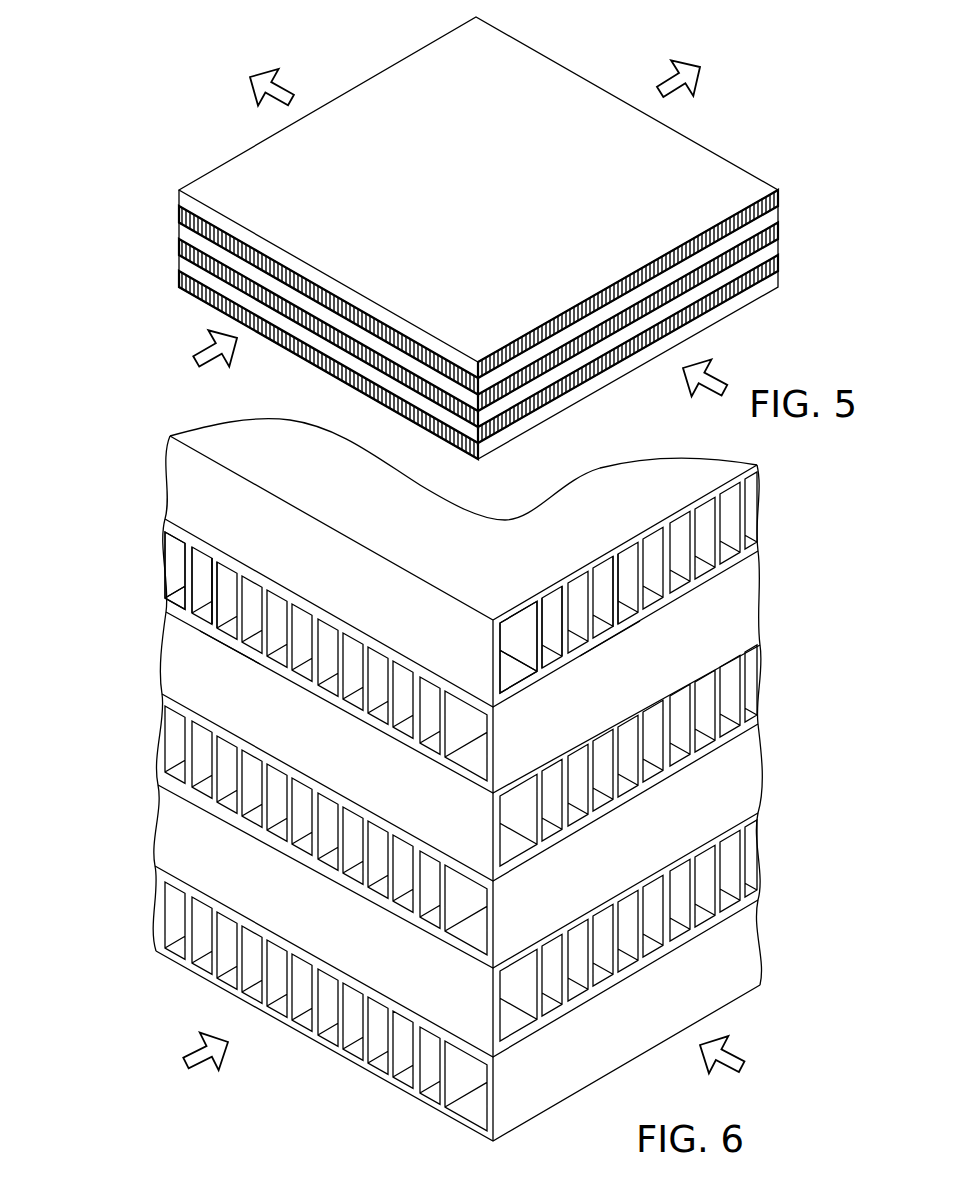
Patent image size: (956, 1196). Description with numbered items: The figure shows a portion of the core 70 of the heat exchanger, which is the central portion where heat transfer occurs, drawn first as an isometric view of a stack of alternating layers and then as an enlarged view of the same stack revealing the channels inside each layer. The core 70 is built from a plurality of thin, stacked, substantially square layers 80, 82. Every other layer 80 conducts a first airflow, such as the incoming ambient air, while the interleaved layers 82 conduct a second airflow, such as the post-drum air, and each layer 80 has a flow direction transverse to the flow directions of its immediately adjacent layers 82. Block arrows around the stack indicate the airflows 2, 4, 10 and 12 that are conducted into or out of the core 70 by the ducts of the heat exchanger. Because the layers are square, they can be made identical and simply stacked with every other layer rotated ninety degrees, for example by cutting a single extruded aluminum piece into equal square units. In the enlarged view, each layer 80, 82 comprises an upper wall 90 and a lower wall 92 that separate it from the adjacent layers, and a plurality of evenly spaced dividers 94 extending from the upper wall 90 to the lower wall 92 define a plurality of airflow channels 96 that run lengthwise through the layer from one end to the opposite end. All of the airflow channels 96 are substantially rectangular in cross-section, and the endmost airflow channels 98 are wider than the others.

In FIG. 5, the airflow 2 is at (193, 347).
In FIG. 6, the airflow 2 is at (190, 1052).
In FIG. 5, the airflow 4 is at (667, 76).
In FIG. 5, the airflow 10 is at (713, 375).
In FIG. 6, the airflow 10 is at (748, 1054).
In FIG. 5, the airflow 12 is at (279, 81).
In FIG. 5, the core 70 is at (130, 212).
In FIG. 6, the core 70 is at (121, 768).
In FIG. 5, the layer 80 is at (779, 215).
In FIG. 6, the layer 80 is at (757, 600).
In FIG. 5, the layer 82 is at (779, 201).
In FIG. 6, the layer 82 is at (752, 512).
In FIG. 6, the upper wall 90 is at (232, 563).
In FIG. 6, the lower wall 92 is at (225, 638).
In FIG. 6, the dividers 94 is at (213, 582).
In FIG. 6, the airflow channels 96 is at (172, 583).
In FIG. 6, the endmost airflow channels 98 is at (512, 666).